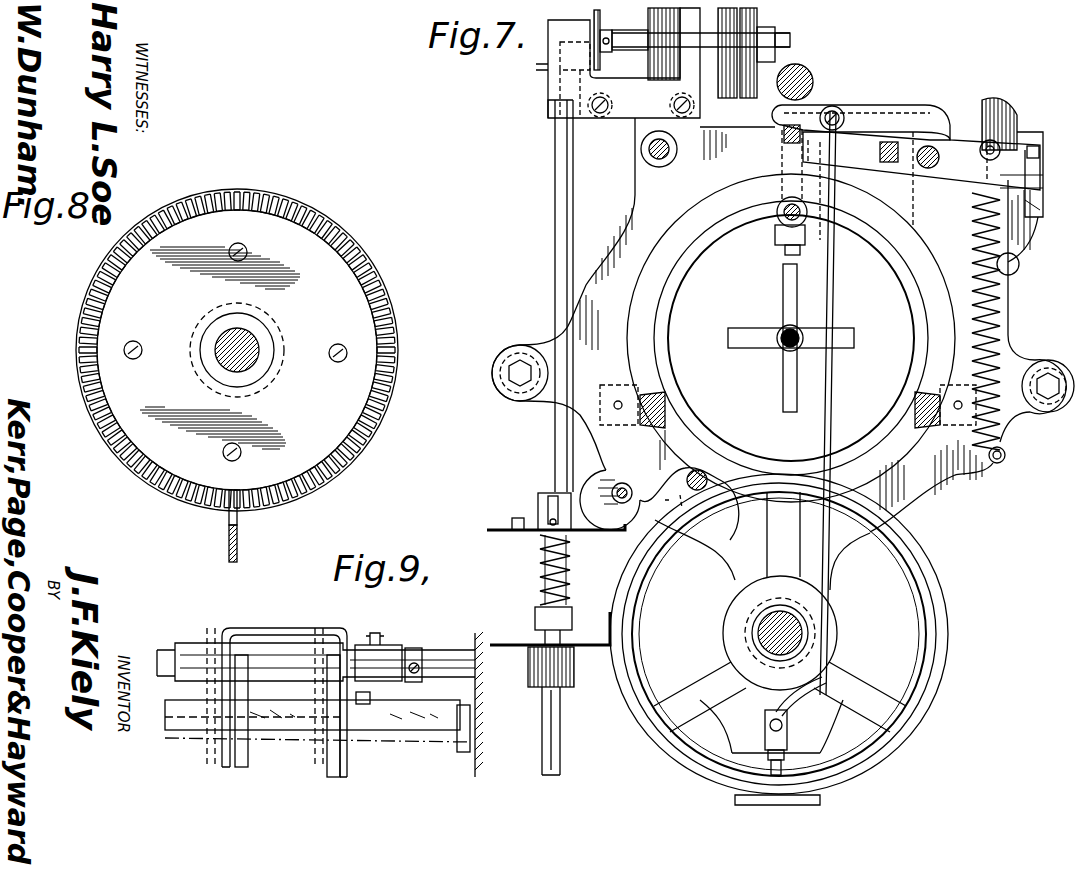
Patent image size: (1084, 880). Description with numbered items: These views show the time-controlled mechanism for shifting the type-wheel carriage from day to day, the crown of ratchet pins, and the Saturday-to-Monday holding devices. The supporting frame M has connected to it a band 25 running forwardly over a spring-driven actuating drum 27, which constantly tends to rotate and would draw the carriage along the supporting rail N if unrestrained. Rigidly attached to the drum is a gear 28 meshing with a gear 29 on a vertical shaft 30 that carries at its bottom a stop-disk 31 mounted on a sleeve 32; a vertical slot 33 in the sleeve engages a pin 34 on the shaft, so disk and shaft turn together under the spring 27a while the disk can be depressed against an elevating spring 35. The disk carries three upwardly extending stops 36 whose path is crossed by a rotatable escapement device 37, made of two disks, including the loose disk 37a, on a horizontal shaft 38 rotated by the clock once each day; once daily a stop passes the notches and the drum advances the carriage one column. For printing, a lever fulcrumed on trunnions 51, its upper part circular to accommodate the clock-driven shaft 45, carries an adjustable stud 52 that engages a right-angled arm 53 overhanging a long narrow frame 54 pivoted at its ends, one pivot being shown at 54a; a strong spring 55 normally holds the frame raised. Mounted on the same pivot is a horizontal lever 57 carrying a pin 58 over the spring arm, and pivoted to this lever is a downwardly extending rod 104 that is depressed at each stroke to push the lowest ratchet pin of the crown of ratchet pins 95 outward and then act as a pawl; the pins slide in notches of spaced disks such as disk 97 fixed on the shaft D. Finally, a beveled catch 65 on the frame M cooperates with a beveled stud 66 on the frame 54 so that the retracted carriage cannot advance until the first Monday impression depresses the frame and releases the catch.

In FIG. 7, the band 25 is at (722, 95).
In FIG. 7, the actuating drum 27 is at (749, 93).
In FIG. 7, the spring 27a is at (701, 44).
In FIG. 7, the gear 28 is at (600, 20).
In FIG. 7, the gear 29 is at (537, 67).
In FIG. 7, the vertical shaft 30 is at (554, 142).
In FIG. 7, the stop-disk 31 is at (495, 533).
In FIG. 7, the sleeve 32 is at (541, 492).
In FIG. 7, the vertical slot 33 is at (546, 498).
In FIG. 7, the pin 34 is at (550, 518).
In FIG. 7, the elevating spring 35 is at (542, 582).
In FIG. 7, the stops 36 is at (508, 522).
In FIG. 7, the escapement device 37 is at (606, 485).
In FIG. 7, the disk 37a is at (640, 512).
In FIG. 7, the horizontal shaft 38 is at (627, 484).
In FIG. 7, the clock-driven shaft 45 is at (785, 342).
In FIG. 7, the trunnions 51 is at (667, 305).
In FIG. 7, the adjustable stud 52 is at (784, 224).
In FIG. 7, the right-angled arm 53 is at (790, 250).
In FIG. 9, the frame 54 is at (385, 725).
In FIG. 7, the frame 54 is at (912, 173).
In FIG. 7, the pivot 54a is at (924, 162).
In FIG. 7, the spring 55 is at (1000, 345).
In FIG. 7, the horizontal lever 57 is at (888, 112).
In FIG. 7, the pin 58 is at (984, 145).
In FIG. 9, the catch 65 is at (380, 650).
In FIG. 9, the stud 66 is at (370, 698).
In FIG. 8, the ratchet pins 95 is at (216, 196).
In FIG. 8, the disk 97 is at (235, 402).
In FIG. 7, the rod 104 is at (837, 313).
In FIG. 8, the shaft D is at (258, 346).
In FIG. 7, the shaft D is at (800, 623).
In FIG. 9, the supporting frame M is at (285, 628).
In FIG. 9, the supporting rail N is at (448, 660).
In FIG. 7, the supporting rail N is at (815, 82).